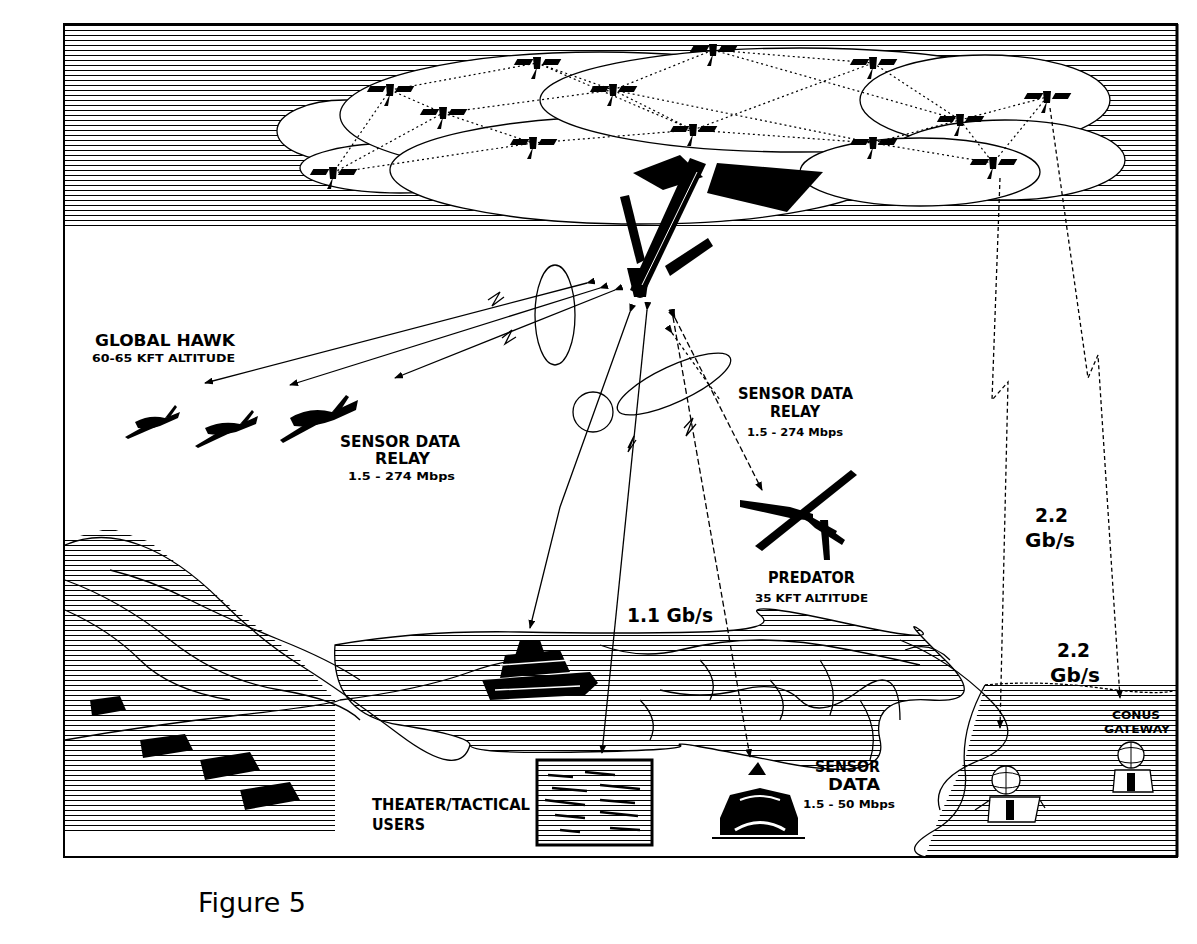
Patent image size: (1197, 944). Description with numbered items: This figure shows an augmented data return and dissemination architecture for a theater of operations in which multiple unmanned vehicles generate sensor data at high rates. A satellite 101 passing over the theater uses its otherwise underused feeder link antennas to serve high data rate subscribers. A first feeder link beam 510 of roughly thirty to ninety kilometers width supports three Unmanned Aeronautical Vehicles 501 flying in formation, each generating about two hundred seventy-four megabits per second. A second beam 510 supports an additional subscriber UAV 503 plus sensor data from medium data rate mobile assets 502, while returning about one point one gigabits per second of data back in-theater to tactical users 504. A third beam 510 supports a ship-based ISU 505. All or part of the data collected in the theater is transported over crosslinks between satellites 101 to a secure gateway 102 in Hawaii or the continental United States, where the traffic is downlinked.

The satellite 101 is at (699, 267).
The gateway 102 is at (1003, 825).
The Unmanned Aeronautical Vehicles (UAVs) 501 is at (150, 440).
The medium data rate assets 502 is at (745, 838).
The subscriber UAV 503 is at (852, 520).
The tactical users 504 is at (562, 848).
The ship-based ISU 505 is at (495, 675).
The feeder link beam 510 is at (541, 272).